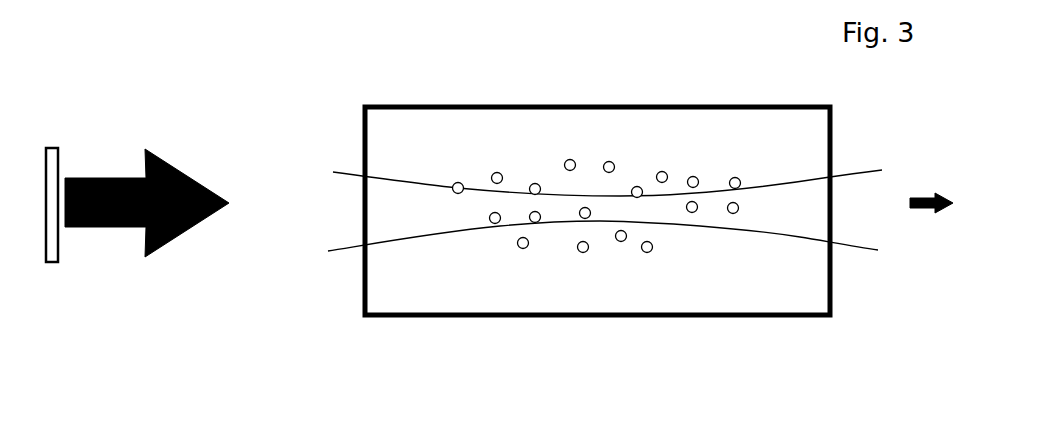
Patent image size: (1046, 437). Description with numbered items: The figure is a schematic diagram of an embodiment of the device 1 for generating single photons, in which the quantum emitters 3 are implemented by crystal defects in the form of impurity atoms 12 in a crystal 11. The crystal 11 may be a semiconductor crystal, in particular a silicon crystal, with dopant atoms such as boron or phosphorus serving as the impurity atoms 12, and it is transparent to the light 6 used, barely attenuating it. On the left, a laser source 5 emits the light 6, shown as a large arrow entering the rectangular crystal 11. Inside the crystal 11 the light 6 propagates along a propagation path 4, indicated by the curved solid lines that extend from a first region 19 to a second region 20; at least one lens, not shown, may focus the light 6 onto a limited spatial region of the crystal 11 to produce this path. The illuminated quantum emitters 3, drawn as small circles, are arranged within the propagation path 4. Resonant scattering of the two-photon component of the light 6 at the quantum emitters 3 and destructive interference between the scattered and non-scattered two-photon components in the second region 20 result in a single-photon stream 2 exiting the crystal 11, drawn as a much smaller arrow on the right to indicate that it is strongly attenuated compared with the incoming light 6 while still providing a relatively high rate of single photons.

The device 1 is at (633, 210).
The single-photon stream 2 is at (930, 208).
The quantum emitters 3 is at (597, 143).
The propagation path 4 is at (347, 172).
The laser source 5 is at (56, 157).
The light 6 is at (120, 228).
The crystal 11 is at (603, 107).
The impurity atoms 12 is at (562, 155).
The first region 19 is at (310, 255).
The second region 20 is at (888, 170).